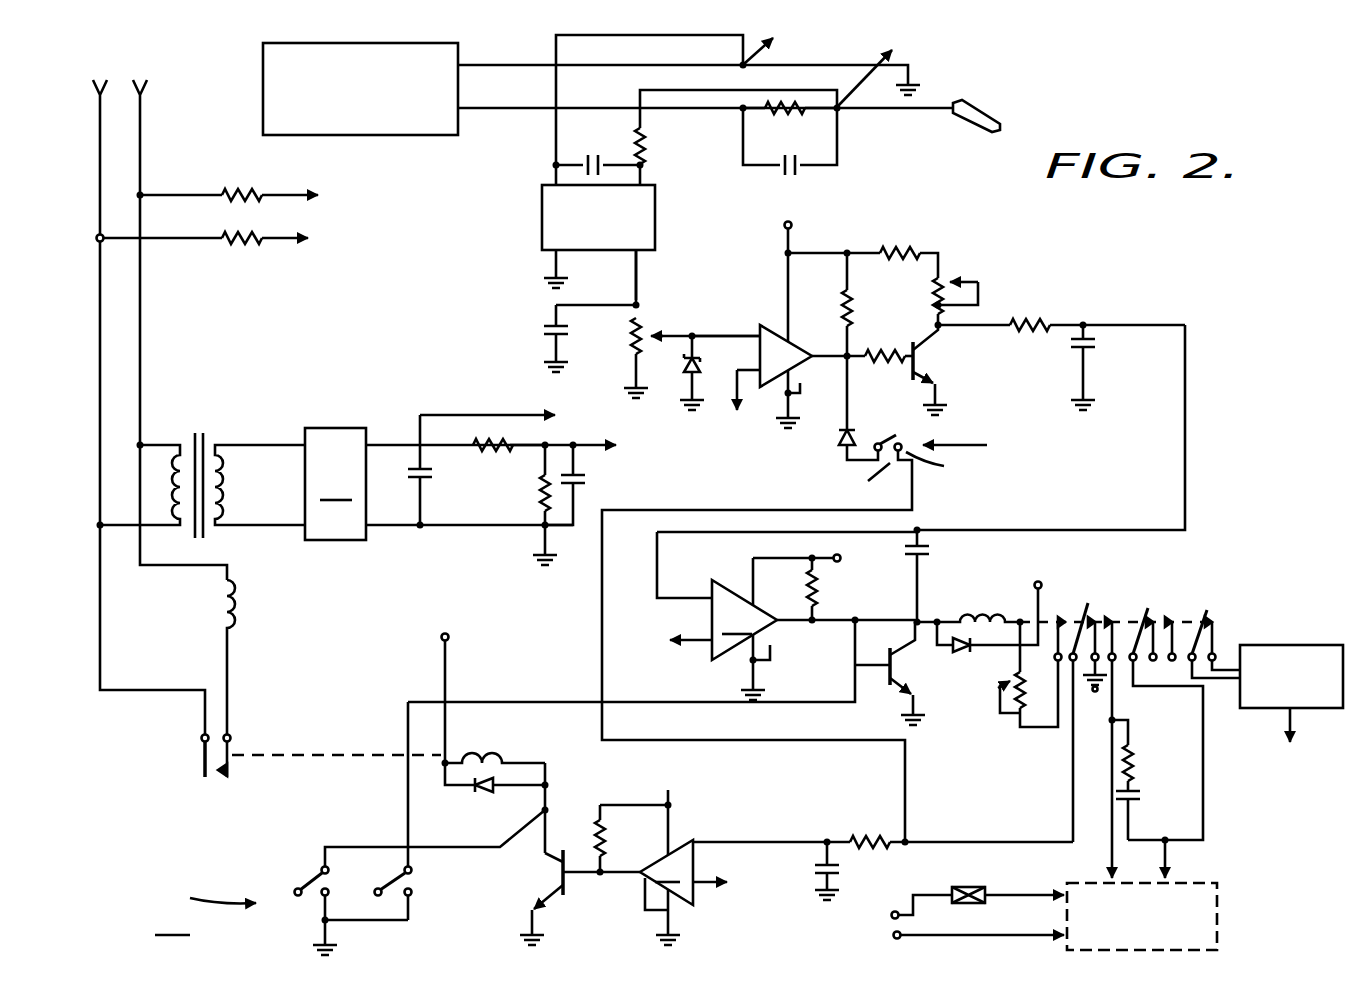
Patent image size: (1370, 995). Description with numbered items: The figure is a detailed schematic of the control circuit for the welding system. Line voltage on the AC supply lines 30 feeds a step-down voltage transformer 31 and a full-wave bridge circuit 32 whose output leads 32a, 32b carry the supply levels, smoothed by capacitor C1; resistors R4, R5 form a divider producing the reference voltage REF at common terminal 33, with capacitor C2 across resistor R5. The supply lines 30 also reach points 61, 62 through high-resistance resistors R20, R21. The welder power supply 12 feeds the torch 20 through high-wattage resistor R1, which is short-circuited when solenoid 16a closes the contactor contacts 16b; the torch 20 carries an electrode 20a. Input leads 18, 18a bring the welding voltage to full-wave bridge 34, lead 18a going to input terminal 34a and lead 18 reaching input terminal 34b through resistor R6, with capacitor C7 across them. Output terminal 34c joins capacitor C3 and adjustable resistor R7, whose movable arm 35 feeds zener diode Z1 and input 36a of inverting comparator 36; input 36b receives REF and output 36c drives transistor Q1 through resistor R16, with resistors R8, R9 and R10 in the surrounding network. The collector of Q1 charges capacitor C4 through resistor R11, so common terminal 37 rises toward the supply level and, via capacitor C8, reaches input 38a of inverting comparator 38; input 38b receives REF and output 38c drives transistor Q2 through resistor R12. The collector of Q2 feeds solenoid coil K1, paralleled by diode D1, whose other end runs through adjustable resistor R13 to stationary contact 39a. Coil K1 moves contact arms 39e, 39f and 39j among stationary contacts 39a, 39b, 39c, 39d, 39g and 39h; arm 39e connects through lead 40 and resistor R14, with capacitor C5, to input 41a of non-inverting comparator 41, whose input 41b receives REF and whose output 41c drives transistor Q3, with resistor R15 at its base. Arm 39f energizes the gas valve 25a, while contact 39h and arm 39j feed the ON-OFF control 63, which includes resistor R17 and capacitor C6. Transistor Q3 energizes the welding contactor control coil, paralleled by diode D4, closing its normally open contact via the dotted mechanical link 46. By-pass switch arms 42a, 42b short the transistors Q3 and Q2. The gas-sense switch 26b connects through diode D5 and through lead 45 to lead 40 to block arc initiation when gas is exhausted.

The welder power supply 12 is at (263, 95).
The input lead 18 is at (640, 90).
The input lead 18a is at (620, 38).
The torch 20 is at (964, 101).
The torch electrode 20a is at (1003, 130).
The solenoid 16a is at (238, 604).
The welding contactor contacts 16b is at (797, 176).
The solenoid operated gas valve 25a is at (968, 887).
The switch means 26b is at (882, 624).
The input leads 30 is at (140, 117).
The step-down voltage transformer 31 is at (208, 430).
The full-wave bridge circuit 32 is at (335, 484).
The output lead 32a is at (368, 445).
The output lead 32b is at (368, 542).
The common terminal 33 is at (605, 443).
The full-wave bridge 34 is at (598, 247).
The input terminal 34a is at (542, 188).
The input terminal 34b is at (648, 187).
The output terminal 34c is at (645, 287).
The movable arm 35 is at (653, 328).
The inverting comparator 36 is at (802, 334).
The input 36a is at (764, 324).
The input 36b is at (760, 370).
The output 36c is at (804, 386).
The common terminal 37 is at (1090, 325).
The inverting comparator 38 is at (748, 562).
The input 38a is at (712, 598).
The input 38b is at (698, 652).
The output 38c is at (808, 630).
The stationary contact 39a is at (1062, 618).
The stationary contact 39b is at (1094, 614).
The stationary contact 39c is at (1150, 607).
The stationary contact 39d is at (1158, 617).
The movable contact arm 39e is at (1089, 603).
The movable contact arm 39f is at (1147, 614).
The stationary contact 39g is at (1160, 620).
The stationary contact 39h is at (1214, 642).
The movable contact 39j is at (1208, 618).
The lead 40 is at (1019, 832).
The non-inverting comparator 41 is at (649, 857).
The input 41a is at (700, 840).
The input terminal 41b is at (700, 898).
The output 41c is at (620, 880).
The switch arm 42a is at (322, 870).
The switch arm 42b is at (404, 872).
The lead 45 is at (778, 741).
The dotted line 46 is at (324, 757).
The point 61 is at (748, 68).
The point 62 is at (840, 113).
The ON-OFF control means 63 is at (1272, 710).
The high-wattage resistor R1 is at (765, 114).
The resistor R4 is at (512, 442).
The resistor R5 is at (538, 487).
The resistor R6 is at (650, 140).
The adjustable resistor R7 is at (628, 347).
The resistor R8 is at (860, 306).
The resistor R9 is at (891, 246).
The resistor R10 is at (928, 298).
The resistor R11 is at (1020, 333).
The resistor R12 is at (820, 590).
The adjustable resistor R13 is at (1024, 688).
The resistor R14 is at (884, 824).
The resistor R15 is at (610, 832).
The resistor R16 is at (880, 370).
The resistor R17 is at (1140, 760).
The resistor R20 is at (268, 172).
The resistor R21 is at (237, 249).
The capacitor C1 is at (432, 482).
The capacitor C2 is at (588, 483).
The capacitor C3 is at (543, 334).
The capacitor C4 is at (1094, 345).
The capacitor C5 is at (834, 874).
The capacitor C6 is at (1142, 801).
The capacitor C7 is at (604, 146).
The capacitor C8 is at (930, 558).
The transistor Q1 is at (948, 370).
The transistor Q2 is at (671, 672).
The transistor Q3 is at (556, 875).
The diode D1 is at (964, 656).
The diode D4 is at (483, 796).
The diode D5 is at (838, 442).
The zener diode Z1 is at (682, 366).
The solenoid coil K1 is at (1008, 598).